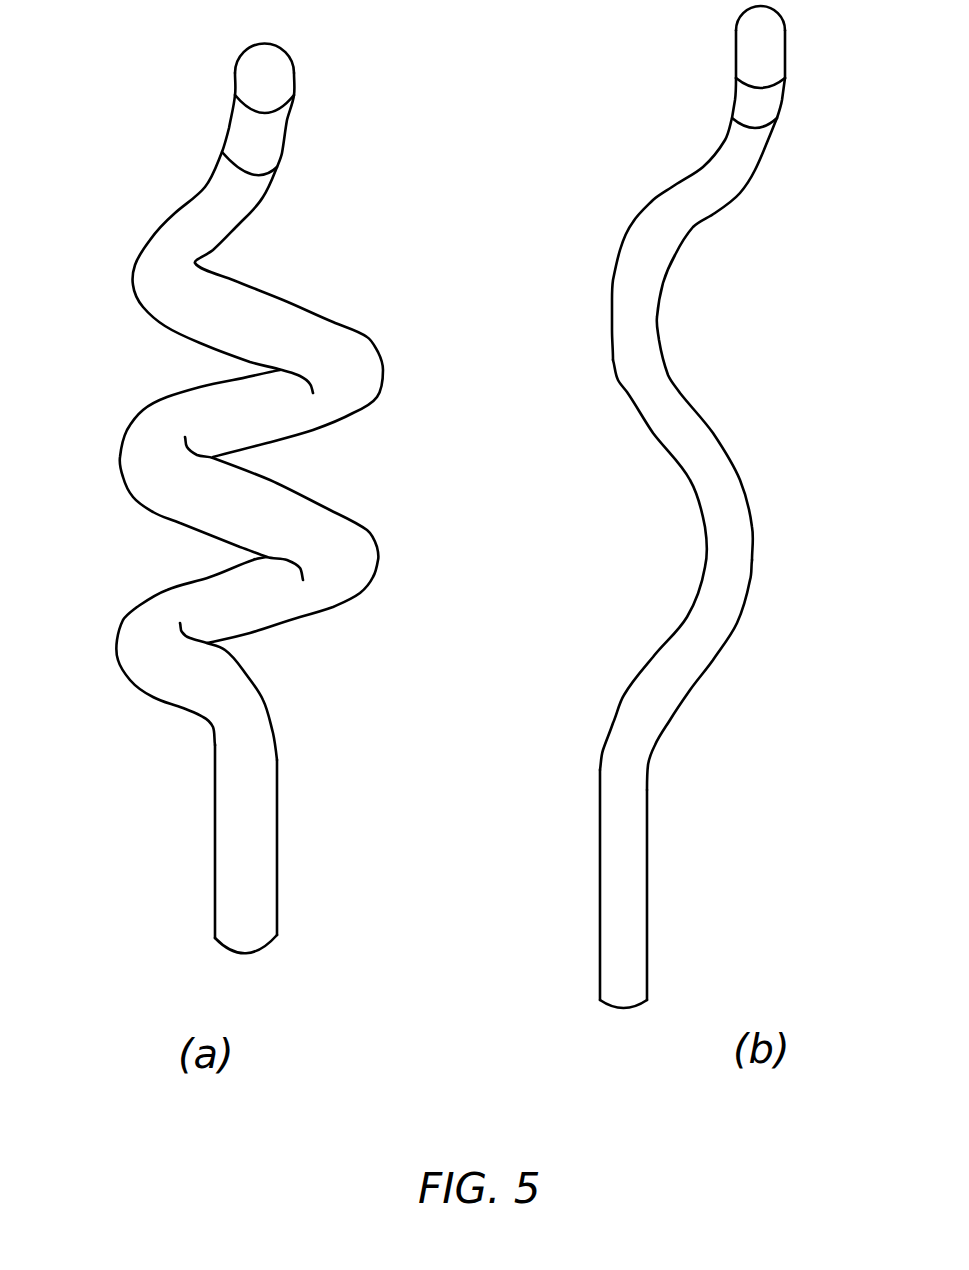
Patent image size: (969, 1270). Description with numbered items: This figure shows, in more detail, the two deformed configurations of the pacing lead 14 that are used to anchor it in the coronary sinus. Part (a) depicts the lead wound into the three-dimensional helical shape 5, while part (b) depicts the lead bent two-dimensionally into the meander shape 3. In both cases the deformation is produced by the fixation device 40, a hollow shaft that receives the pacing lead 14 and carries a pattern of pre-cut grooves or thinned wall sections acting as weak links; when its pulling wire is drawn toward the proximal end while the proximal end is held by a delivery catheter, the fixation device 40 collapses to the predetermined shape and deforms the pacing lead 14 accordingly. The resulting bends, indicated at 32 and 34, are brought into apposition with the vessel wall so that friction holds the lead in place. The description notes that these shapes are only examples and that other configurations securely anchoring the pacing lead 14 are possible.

The pacing lead 14 is at (293, 83).
The first curved section 32 is at (377, 393).
The second curved section 34 is at (122, 475).
The fixation device 40 is at (316, 630).
The helical shape 5 is at (82, 394).
The meander shape 3 is at (860, 394).